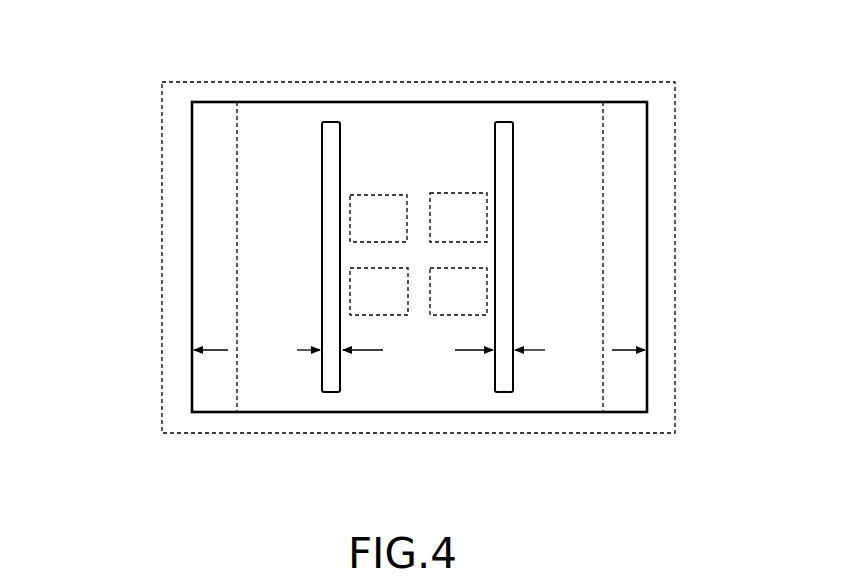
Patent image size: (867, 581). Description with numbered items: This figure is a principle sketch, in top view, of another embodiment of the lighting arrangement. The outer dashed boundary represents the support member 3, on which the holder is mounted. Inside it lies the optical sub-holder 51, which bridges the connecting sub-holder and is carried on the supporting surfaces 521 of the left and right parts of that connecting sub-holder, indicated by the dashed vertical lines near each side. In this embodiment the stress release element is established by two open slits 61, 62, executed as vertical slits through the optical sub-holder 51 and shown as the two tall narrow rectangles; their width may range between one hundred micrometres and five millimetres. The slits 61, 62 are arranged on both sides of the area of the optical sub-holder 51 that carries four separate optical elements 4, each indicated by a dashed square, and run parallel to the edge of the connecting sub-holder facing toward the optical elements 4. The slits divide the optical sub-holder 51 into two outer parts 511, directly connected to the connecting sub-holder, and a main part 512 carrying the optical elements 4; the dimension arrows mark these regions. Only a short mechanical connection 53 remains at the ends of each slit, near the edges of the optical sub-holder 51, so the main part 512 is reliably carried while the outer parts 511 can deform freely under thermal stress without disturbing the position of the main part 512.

The support member 3 is at (675, 135).
The optical element 4 is at (418, 254).
The optical sub-holder 51 is at (647, 257).
The outer parts 511 is at (419, 351).
The main part 512 is at (418, 351).
The supporting surface 521 is at (217, 190).
The mechanical connection 53 is at (332, 114).
The open slit 61 is at (515, 193).
The open slit 62 is at (321, 188).